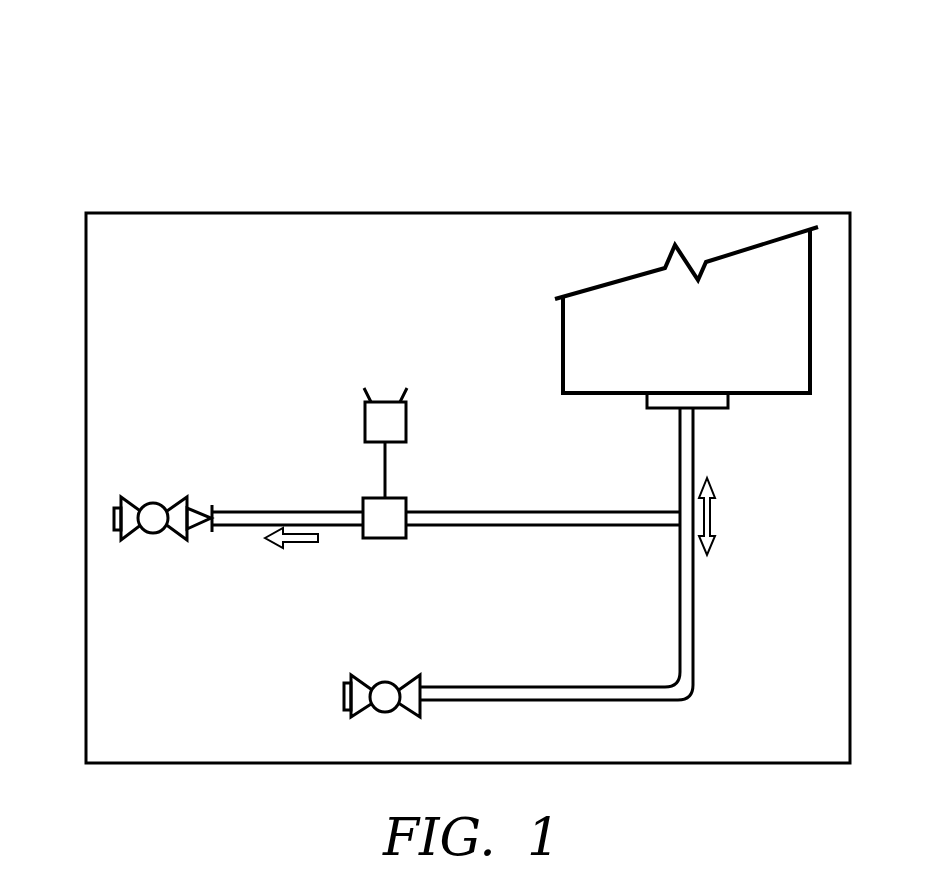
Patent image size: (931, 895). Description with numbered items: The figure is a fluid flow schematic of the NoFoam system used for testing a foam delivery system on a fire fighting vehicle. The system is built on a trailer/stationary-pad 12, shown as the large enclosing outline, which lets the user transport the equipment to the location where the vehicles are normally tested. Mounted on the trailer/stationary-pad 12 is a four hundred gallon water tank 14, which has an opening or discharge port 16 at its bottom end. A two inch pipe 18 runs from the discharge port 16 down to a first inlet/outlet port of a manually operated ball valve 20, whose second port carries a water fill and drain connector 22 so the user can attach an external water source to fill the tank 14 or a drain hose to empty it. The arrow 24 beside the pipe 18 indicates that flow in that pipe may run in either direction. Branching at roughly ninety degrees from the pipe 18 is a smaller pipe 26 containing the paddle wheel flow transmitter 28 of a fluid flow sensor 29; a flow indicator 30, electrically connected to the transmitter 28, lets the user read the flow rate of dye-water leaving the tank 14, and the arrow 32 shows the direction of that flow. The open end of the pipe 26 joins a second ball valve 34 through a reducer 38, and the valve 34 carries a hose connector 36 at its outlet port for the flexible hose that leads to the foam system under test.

The trailer/stationary-pad 12 is at (207, 208).
The water tank 14 is at (561, 326).
The discharge port 16 is at (680, 410).
The pipe 18 is at (694, 605).
The ball valve 20 is at (378, 678).
The water fill and drain connector 22 is at (344, 688).
The arrow 24 is at (713, 510).
The pipe 26 is at (500, 510).
The paddle wheel flow transmitter 28 is at (385, 538).
The fluid flow sensor 29 is at (345, 455).
The flow indicator 30 is at (406, 422).
The arrow 32 is at (296, 546).
The ball valve 34 is at (148, 500).
The hose connector 36 is at (114, 514).
The reducer 38 is at (212, 505).